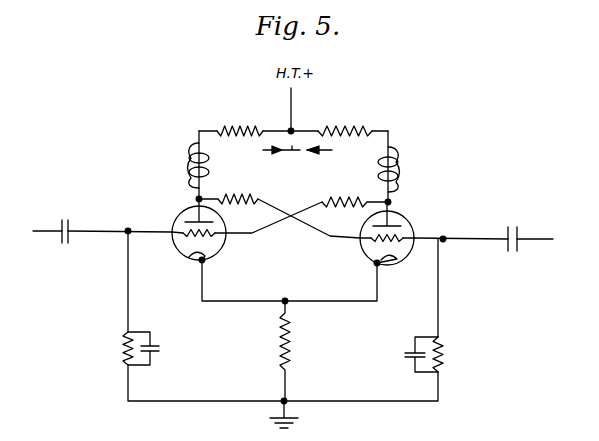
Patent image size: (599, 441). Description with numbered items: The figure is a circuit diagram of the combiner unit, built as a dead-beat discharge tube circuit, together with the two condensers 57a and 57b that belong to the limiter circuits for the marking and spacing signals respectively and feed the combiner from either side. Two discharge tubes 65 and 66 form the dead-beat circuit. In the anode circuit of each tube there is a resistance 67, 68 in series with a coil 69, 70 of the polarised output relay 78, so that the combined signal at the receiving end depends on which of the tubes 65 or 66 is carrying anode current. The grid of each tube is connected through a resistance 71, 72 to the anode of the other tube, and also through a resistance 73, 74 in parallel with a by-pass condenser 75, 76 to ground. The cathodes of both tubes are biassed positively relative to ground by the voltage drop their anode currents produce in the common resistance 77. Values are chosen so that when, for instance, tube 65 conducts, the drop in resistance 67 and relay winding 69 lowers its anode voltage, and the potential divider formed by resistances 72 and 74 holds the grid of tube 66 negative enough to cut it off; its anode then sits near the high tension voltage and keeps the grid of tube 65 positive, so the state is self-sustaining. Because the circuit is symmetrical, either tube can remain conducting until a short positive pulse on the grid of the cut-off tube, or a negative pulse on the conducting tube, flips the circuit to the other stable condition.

The condenser 57a is at (65, 219).
The condenser 57b is at (516, 230).
The discharge tube 65 is at (212, 258).
The discharge tube 66 is at (362, 253).
The resistance 67 is at (232, 127).
The resistance 68 is at (342, 128).
The coil 69 is at (192, 173).
The coil 70 is at (396, 186).
The resistance 71 is at (343, 197).
The resistance 72 is at (230, 194).
The resistance 73 is at (122, 352).
The resistance 74 is at (445, 352).
The by-pass condenser 75 is at (160, 348).
The by-pass condenser 76 is at (405, 355).
The common resistance 77 is at (292, 349).
The polarised output relay 78 is at (297, 163).